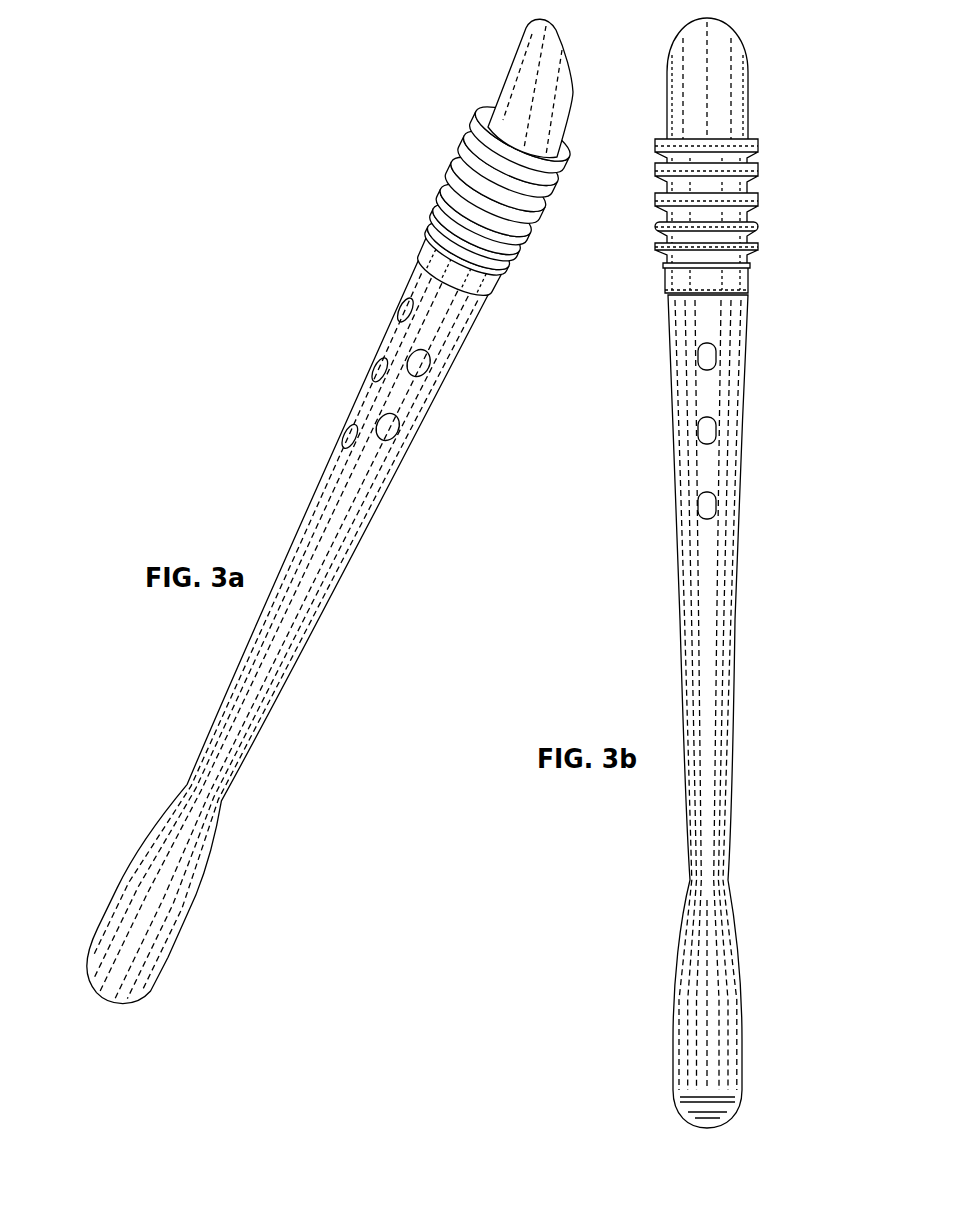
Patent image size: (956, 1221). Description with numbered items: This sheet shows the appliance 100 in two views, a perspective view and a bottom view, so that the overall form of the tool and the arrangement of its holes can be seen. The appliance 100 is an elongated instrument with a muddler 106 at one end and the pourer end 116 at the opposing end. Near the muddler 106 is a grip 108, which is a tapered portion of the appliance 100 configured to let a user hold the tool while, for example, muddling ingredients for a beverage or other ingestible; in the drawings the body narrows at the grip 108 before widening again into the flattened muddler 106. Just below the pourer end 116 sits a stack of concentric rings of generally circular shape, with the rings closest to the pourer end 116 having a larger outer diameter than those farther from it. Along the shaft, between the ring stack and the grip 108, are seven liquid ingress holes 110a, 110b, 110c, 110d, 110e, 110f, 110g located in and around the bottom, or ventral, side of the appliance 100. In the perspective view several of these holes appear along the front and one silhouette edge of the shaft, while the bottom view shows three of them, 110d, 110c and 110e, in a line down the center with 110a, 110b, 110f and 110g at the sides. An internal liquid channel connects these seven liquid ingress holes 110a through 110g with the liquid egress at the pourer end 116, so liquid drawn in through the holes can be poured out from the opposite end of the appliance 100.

In FIG. 3A, the appliance 100 is at (312, 322).
In FIG. 3B, the appliance 100 is at (655, 619).
In FIG. 3A, the muddler 106 is at (123, 953).
In FIG. 3A, the grip 108 is at (233, 795).
In FIG. 3A, the pourer end 116 is at (510, 84).
In FIG. 3B, the liquid ingress hole 110a is at (670, 383).
In FIG. 3B, the liquid ingress hole 110b is at (675, 468).
In FIG. 3B, the liquid ingress hole 110c is at (697, 433).
In FIG. 3B, the liquid ingress hole 110d is at (715, 358).
In FIG. 3B, the liquid ingress hole 110e is at (717, 510).
In FIG. 3B, the liquid ingress hole 110f is at (745, 382).
In FIG. 3B, the liquid ingress hole 110g is at (740, 462).